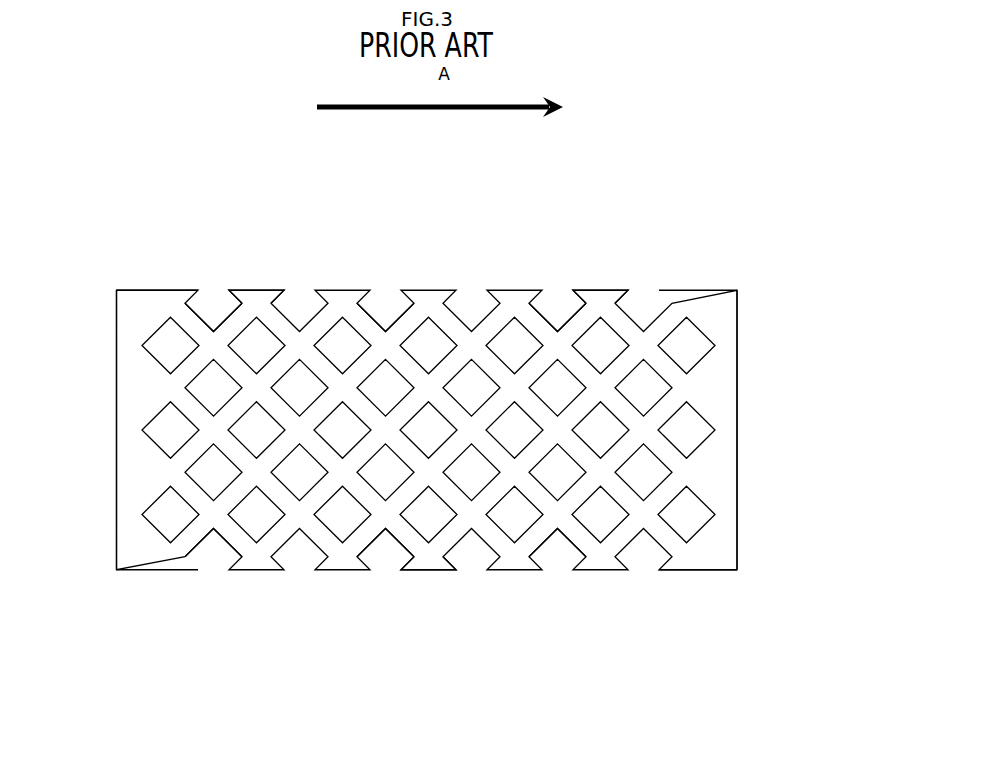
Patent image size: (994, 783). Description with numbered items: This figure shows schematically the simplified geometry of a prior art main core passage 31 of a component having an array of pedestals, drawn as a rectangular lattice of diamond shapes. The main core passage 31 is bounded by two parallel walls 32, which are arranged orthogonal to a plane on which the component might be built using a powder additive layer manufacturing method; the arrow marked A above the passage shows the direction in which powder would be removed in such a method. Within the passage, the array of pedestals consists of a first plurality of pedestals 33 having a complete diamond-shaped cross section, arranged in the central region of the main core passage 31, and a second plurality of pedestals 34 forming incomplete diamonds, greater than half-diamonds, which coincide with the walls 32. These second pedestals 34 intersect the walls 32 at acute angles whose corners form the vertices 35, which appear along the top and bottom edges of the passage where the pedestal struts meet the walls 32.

The main core passage 31 is at (558, 345).
The parallel walls 32 is at (157, 295).
The first plurality of pedestals 33 is at (210, 396).
The second plurality of pedestals 34 is at (388, 300).
The vertices 35 is at (270, 293).